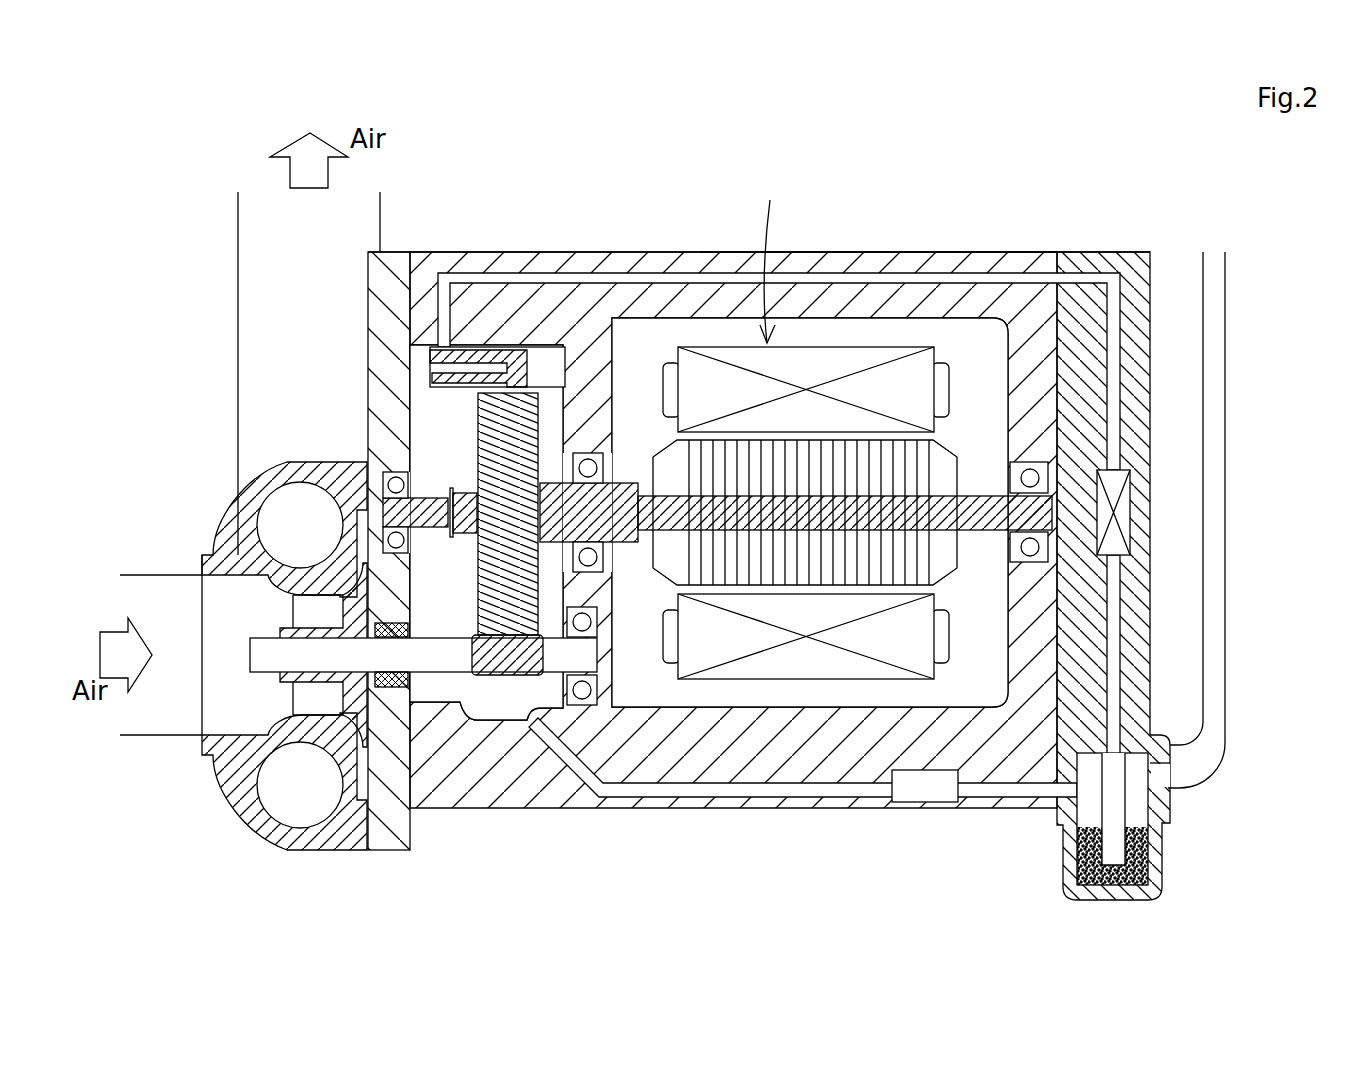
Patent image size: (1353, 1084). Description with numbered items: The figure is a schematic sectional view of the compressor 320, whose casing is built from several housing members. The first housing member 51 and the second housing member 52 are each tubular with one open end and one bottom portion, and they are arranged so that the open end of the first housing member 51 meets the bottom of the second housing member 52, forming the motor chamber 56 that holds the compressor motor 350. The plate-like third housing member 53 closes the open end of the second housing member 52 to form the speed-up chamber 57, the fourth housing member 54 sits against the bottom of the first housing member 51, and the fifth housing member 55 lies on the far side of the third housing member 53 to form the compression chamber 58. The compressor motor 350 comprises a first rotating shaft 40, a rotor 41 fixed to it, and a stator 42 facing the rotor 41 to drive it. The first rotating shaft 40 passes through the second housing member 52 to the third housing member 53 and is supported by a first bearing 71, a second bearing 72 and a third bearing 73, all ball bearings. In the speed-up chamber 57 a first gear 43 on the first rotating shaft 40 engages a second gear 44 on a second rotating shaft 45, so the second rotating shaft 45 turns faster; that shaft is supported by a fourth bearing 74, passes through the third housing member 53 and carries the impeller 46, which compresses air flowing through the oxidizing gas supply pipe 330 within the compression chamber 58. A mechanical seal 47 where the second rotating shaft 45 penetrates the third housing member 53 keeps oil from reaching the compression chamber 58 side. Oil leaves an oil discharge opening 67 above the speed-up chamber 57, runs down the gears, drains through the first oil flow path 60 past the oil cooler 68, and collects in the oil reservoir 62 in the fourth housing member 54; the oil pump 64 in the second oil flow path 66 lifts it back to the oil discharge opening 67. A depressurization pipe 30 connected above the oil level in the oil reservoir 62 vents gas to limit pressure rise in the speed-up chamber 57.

The depressurization pipe 30 is at (1227, 600).
The first rotating shaft 40 is at (980, 532).
The rotor 41 is at (957, 477).
The stator 42 is at (927, 362).
The first gear 43 is at (503, 580).
The second gear 44 is at (498, 665).
The second rotating shaft 45 is at (443, 648).
The impeller 46 is at (330, 735).
The mechanical seal 47 is at (388, 622).
The first housing member 51 is at (885, 262).
The second housing member 52 is at (540, 262).
The third housing member 53 is at (385, 338).
The fourth housing member 54 is at (1132, 442).
The fifth housing member 55 is at (255, 823).
The motor chamber 56 is at (649, 375).
The speed-up chamber 57 is at (454, 452).
The compression chamber 58 is at (245, 627).
The first oil flow path 60 is at (818, 788).
The oil reservoir 62 is at (1133, 818).
The oil pump 64 is at (1118, 512).
The second oil flow path 66 is at (1113, 403).
The oil discharge opening 67 is at (528, 388).
The oil cooler 68 is at (933, 790).
The first bearing 71 is at (1030, 462).
The second bearing 72 is at (605, 467).
The third bearing 73 is at (385, 478).
The fourth bearing 74 is at (596, 692).
The compressor 320 is at (975, 185).
The oxidizing gas supply pipe 330 is at (382, 218).
The compressor motor 350 is at (775, 257).